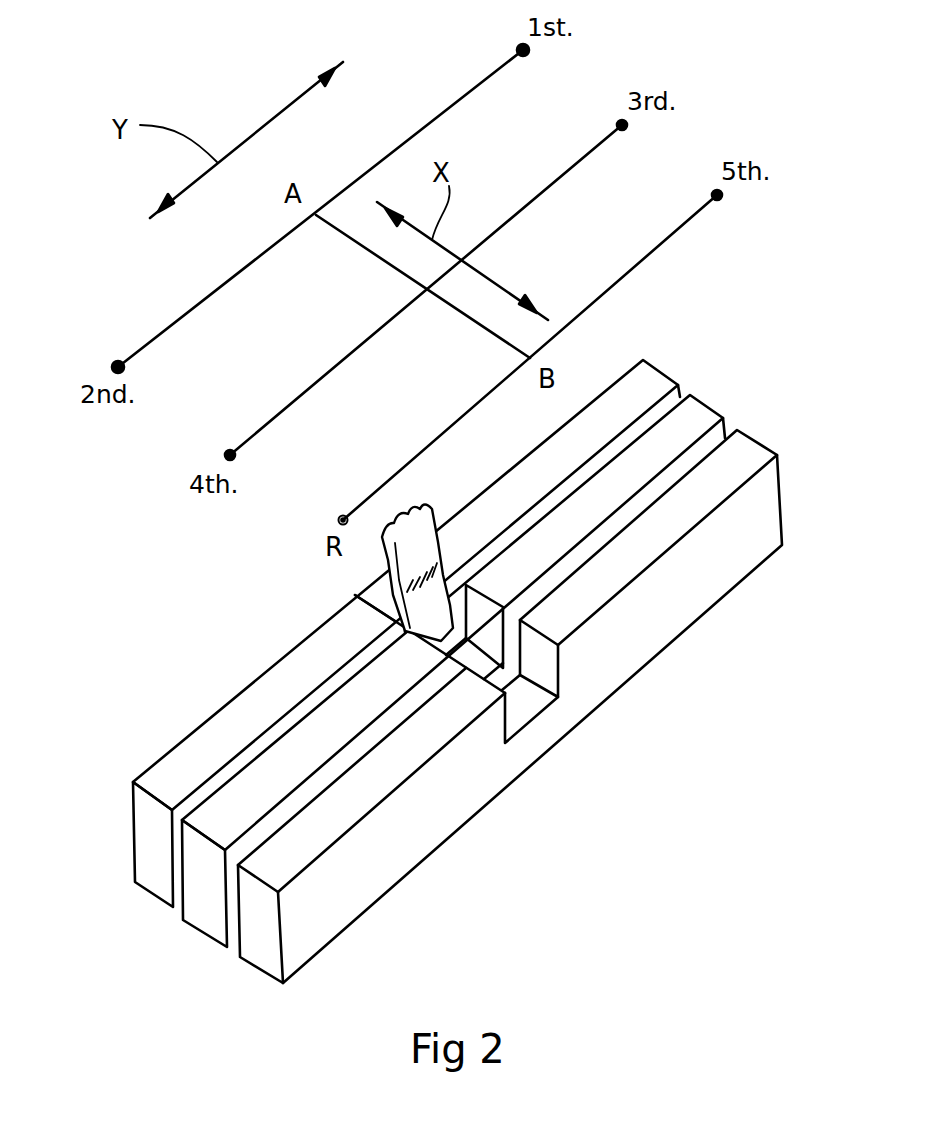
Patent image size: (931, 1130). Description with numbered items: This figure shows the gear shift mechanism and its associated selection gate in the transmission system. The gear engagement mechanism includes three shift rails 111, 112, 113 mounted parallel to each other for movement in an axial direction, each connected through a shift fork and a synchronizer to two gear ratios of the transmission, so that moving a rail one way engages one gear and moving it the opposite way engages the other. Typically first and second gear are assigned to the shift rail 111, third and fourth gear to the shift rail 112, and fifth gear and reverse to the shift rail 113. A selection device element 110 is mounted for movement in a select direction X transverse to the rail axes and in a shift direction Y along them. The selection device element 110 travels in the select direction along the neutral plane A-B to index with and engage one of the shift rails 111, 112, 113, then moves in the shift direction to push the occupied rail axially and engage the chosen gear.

The selection device element 110 is at (378, 572).
The shift rail 111 is at (237, 728).
The shift rail 112 is at (244, 814).
The shift rail 113 is at (464, 817).